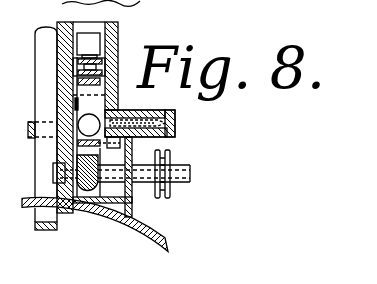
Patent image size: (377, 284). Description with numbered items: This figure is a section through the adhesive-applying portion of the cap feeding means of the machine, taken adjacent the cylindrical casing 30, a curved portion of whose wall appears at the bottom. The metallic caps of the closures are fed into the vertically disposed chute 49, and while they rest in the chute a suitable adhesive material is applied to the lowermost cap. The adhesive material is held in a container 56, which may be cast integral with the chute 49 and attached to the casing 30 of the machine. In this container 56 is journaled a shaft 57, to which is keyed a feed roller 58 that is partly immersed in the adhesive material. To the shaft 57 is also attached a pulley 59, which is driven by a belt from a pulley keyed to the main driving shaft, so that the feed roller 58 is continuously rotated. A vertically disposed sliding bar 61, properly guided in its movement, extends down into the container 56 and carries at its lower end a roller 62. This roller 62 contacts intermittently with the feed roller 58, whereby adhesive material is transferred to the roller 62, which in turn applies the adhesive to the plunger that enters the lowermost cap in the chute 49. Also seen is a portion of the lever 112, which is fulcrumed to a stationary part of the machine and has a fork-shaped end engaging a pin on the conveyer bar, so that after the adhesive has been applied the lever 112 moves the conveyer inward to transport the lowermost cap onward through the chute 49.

The chute 49 is at (118, 30).
The sliding bar 61 is at (104, 106).
The lever 112 is at (170, 123).
The roller 62 is at (68, 145).
The feed roller 58 is at (65, 193).
The container 56 is at (118, 192).
The shaft 57 is at (167, 173).
The pulley 59 is at (170, 153).
The cylindrical casing 30 is at (147, 240).